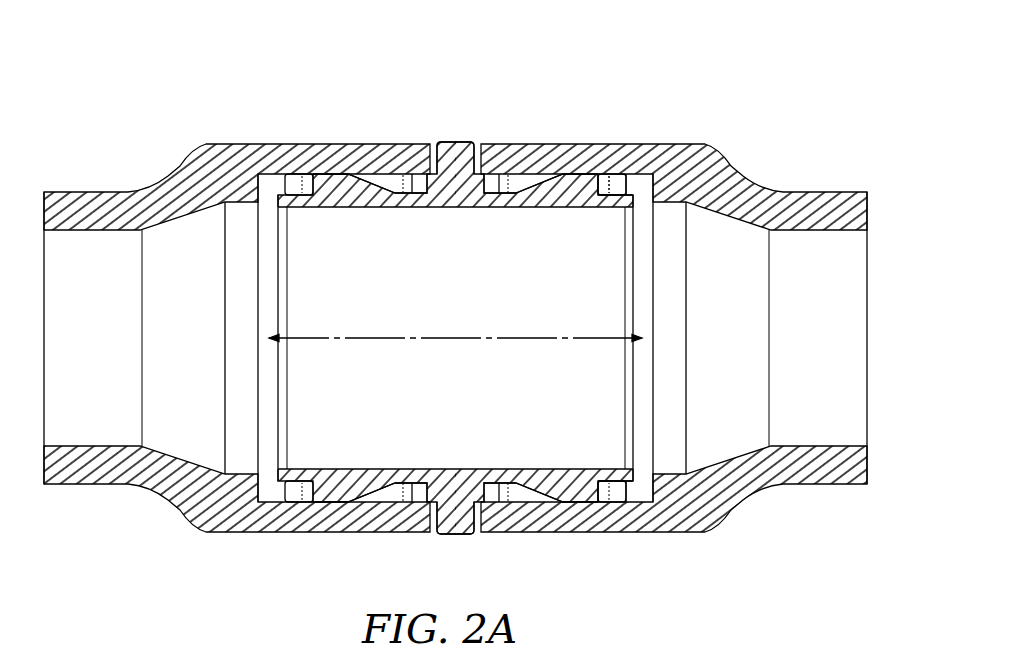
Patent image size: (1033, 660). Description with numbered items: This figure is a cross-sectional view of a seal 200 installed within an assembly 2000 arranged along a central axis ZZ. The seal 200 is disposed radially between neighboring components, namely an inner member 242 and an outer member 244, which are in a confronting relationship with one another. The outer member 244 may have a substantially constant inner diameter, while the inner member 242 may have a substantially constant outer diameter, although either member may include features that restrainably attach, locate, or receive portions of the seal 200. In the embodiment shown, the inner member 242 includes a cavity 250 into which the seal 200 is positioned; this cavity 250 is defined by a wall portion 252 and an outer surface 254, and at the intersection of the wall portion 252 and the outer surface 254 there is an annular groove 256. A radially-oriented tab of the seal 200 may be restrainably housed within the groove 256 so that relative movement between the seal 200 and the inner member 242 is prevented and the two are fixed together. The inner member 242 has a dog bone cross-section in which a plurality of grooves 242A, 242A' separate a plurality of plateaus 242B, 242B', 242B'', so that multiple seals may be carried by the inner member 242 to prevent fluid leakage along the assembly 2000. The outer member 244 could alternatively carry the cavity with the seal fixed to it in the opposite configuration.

The assembly 2000 is at (462, 268).
The seal 200 is at (658, 168).
The outer member 244 is at (712, 166).
The inner member 242 is at (493, 208).
The groove 242A is at (518, 300).
The groove 242A' is at (395, 298).
The plateau 242B is at (559, 278).
The plateau 242B' is at (434, 290).
The plateau 242B'' is at (331, 298).
The cavity 250 is at (627, 180).
The wall portion 252 is at (588, 180).
The outer surface 254 is at (615, 207).
The annular groove 256 is at (603, 206).
The central axis ZZ is at (522, 342).